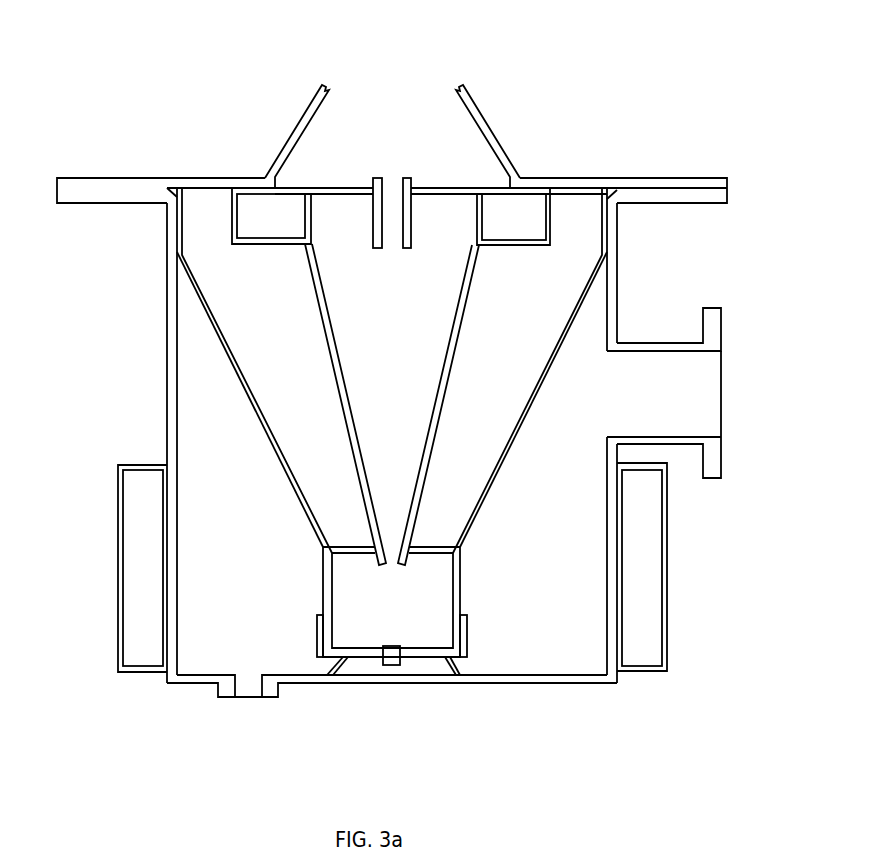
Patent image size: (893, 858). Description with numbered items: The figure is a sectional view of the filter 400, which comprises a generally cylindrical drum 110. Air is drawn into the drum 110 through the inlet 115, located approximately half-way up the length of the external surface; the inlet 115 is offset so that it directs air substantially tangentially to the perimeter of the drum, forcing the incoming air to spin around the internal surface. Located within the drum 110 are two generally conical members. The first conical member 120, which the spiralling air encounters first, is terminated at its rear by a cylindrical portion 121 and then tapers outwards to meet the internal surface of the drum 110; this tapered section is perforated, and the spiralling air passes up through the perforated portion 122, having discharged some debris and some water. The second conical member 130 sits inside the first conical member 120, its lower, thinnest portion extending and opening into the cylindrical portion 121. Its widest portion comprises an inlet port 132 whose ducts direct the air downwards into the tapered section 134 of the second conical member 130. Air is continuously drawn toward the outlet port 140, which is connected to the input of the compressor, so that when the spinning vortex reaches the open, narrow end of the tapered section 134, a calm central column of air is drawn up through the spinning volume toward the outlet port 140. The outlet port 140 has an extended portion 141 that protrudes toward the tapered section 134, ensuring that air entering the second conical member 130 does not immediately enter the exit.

The filter 400 is at (238, 64).
The drum 110 is at (172, 345).
The inlet 115 is at (694, 392).
The first conical member 120 is at (304, 530).
The cylindrical portion 121 is at (484, 599).
The perforated portion 122 is at (231, 385).
The second conical member 130 is at (475, 288).
The inlet port 132 is at (521, 218).
The tapered section 134 is at (335, 392).
The outlet port 140 is at (407, 100).
The extended portion 141 is at (398, 253).